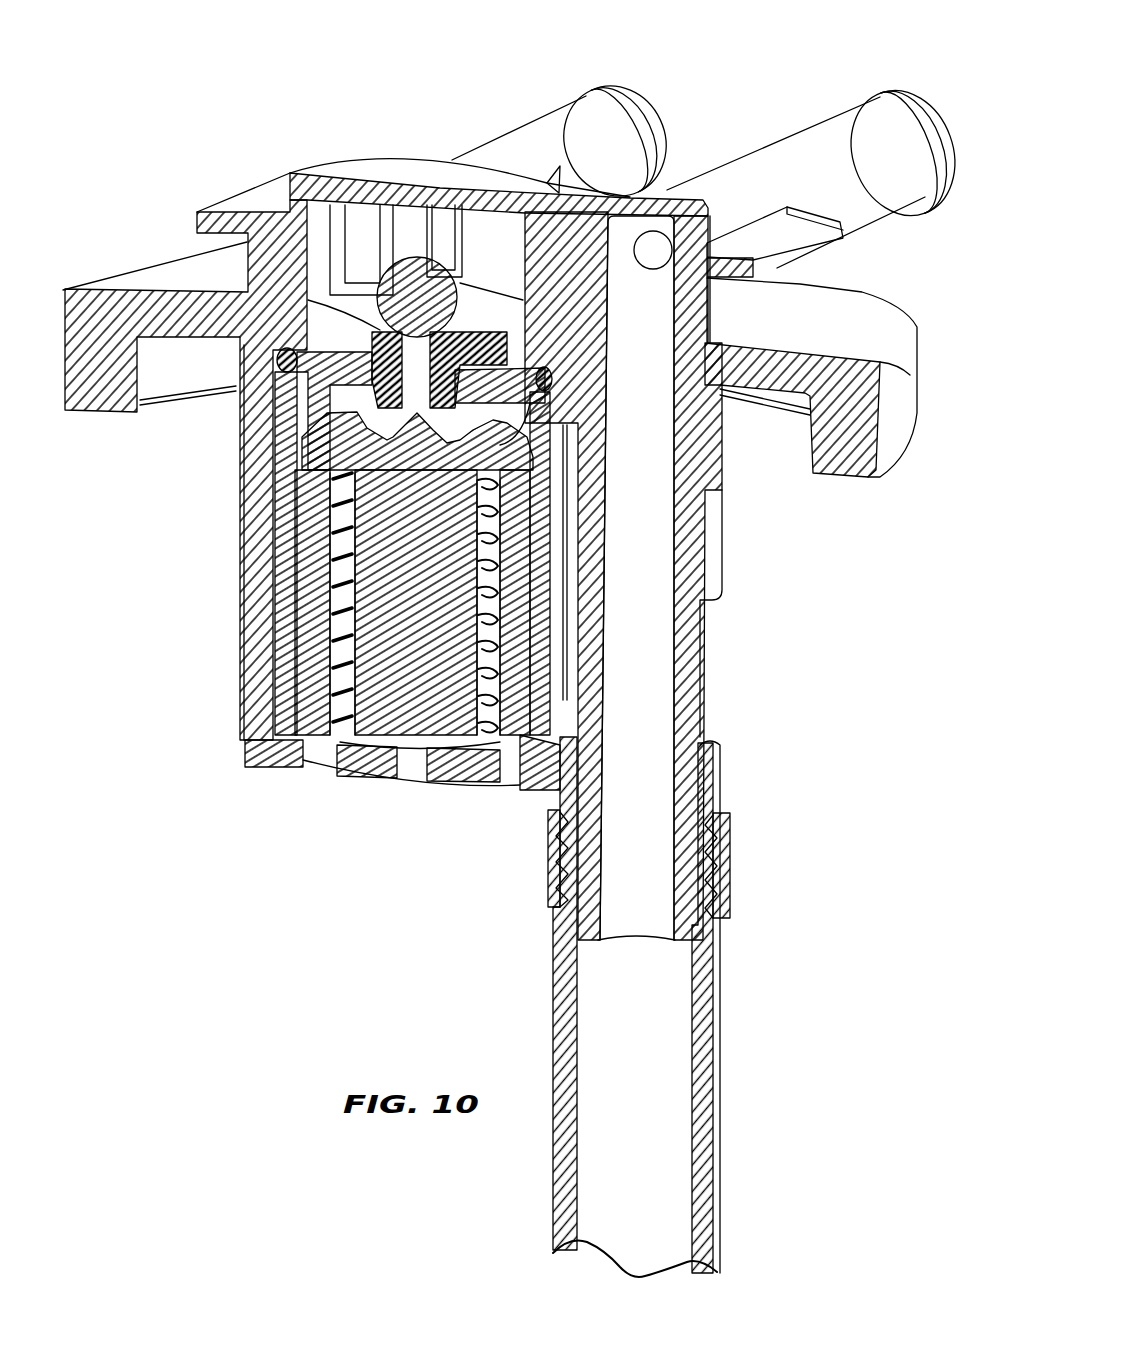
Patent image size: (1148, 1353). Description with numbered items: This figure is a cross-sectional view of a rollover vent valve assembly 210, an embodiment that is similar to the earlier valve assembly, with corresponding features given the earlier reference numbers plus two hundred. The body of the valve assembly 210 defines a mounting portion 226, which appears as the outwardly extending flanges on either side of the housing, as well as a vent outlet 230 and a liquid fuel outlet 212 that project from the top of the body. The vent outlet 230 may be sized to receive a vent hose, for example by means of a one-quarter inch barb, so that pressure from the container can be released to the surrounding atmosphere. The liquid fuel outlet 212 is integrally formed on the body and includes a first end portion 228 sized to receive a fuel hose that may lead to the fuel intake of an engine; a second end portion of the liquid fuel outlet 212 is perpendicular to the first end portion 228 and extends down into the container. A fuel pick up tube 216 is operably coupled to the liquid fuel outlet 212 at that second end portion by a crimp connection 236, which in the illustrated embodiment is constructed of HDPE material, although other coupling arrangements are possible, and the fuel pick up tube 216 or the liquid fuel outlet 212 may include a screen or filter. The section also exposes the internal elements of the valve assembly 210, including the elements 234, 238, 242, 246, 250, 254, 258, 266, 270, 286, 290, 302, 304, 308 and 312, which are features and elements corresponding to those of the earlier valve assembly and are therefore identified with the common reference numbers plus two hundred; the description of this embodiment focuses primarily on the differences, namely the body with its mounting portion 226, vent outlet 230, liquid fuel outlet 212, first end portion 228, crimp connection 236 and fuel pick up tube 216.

The rollover vent valve assembly 210 is at (318, 154).
The liquid fuel outlet 212 is at (797, 152).
The fuel pick up tube 216 is at (703, 1038).
The mounting portion 226 is at (107, 388).
The first end portion 228 is at (930, 96).
The vent outlet 230 is at (605, 137).
The cylinder wall 234 is at (282, 522).
The crimp connection 236 is at (730, 872).
The piston skirt 238 is at (312, 582).
The bottom cap 242 is at (273, 760).
The cap 246 is at (375, 412).
The gap 250 is at (532, 663).
The plate 254 is at (501, 281).
The bottom opening 258 is at (320, 769).
The wall 266 is at (478, 408).
The cavity 270 is at (505, 347).
The ring 286 is at (500, 396).
The ball valve 290 is at (357, 333).
The valve seat 302 is at (352, 332).
The crown 304 is at (417, 435).
The piston 308 is at (345, 598).
The spring 312 is at (344, 638).